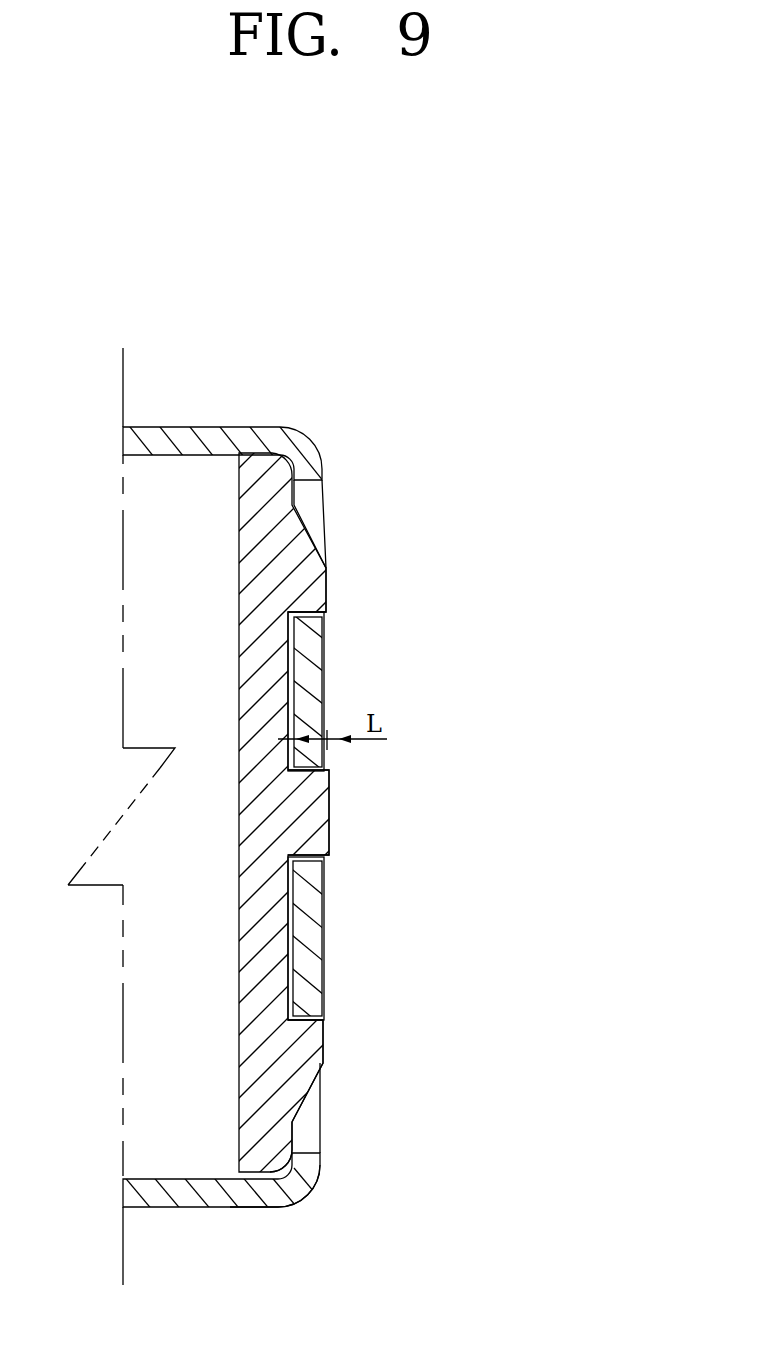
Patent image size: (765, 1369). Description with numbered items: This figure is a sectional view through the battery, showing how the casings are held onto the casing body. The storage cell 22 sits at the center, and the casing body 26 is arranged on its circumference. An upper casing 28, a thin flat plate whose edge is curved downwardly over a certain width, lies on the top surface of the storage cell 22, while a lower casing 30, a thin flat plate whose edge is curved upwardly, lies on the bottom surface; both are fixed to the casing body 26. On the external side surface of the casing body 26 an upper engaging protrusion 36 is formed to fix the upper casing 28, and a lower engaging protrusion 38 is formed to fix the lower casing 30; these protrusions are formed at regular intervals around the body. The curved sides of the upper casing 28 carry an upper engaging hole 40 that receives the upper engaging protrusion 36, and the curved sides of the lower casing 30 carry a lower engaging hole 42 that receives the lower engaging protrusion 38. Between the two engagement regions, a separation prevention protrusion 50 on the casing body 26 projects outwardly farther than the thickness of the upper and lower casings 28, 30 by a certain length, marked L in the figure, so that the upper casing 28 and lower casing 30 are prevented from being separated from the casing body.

The storage cell 22 is at (188, 1140).
The casing body 26 is at (255, 477).
The upper casing 28 is at (186, 442).
The lower casing 30 is at (252, 1197).
The upper engaging protrusion 36 is at (325, 587).
The lower engaging protrusion 38 is at (302, 1045).
The upper engaging hole 40 is at (310, 509).
The lower engaging hole 42 is at (307, 1118).
The separation prevention protrusion 50 is at (307, 817).